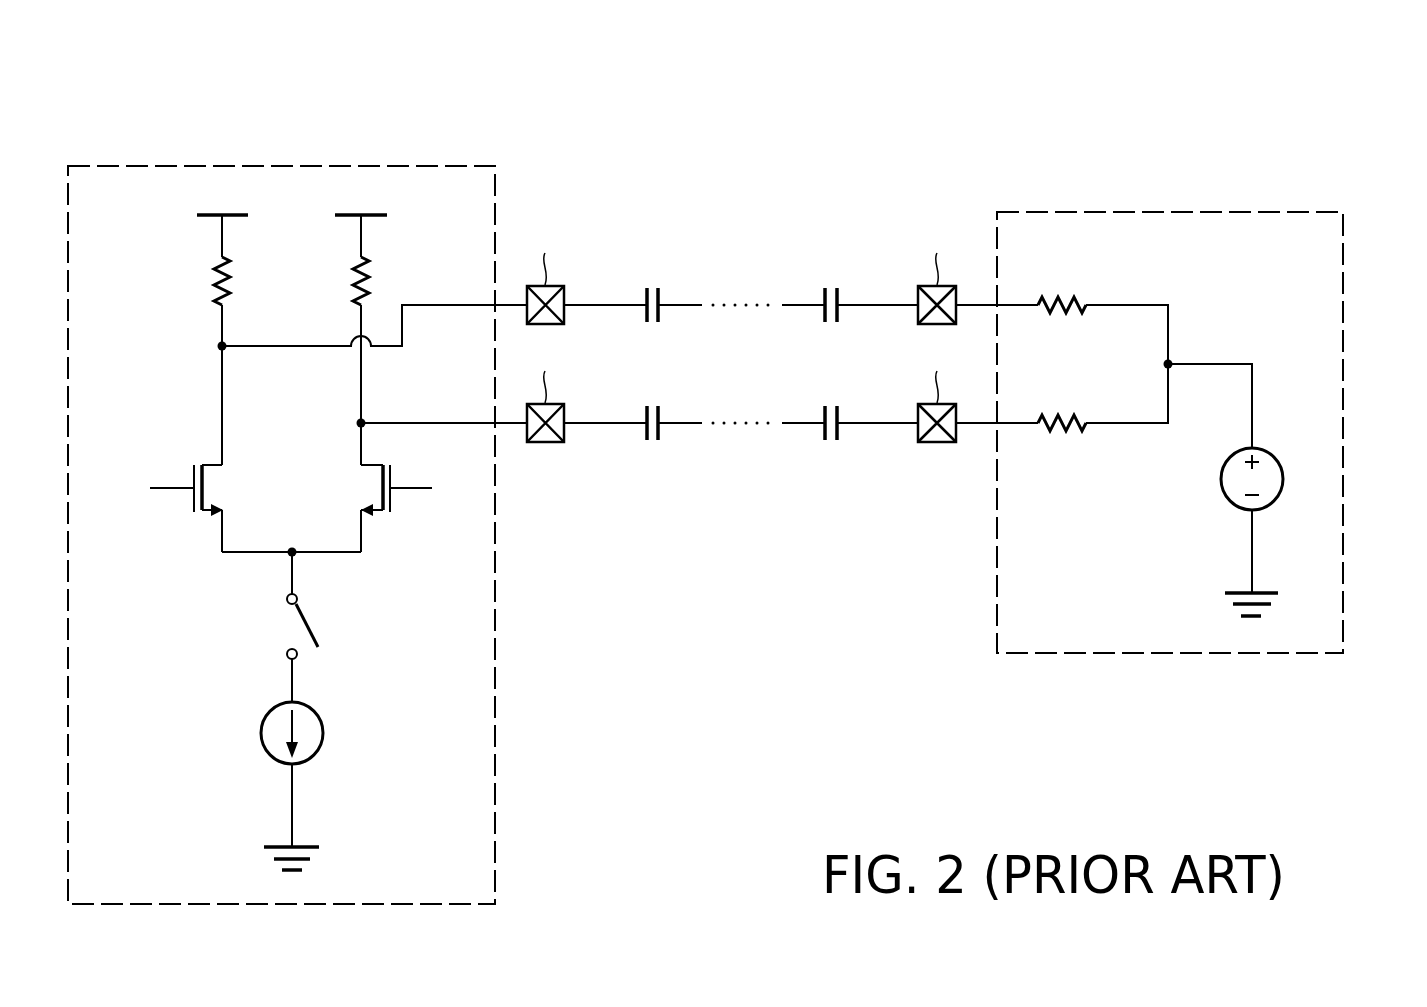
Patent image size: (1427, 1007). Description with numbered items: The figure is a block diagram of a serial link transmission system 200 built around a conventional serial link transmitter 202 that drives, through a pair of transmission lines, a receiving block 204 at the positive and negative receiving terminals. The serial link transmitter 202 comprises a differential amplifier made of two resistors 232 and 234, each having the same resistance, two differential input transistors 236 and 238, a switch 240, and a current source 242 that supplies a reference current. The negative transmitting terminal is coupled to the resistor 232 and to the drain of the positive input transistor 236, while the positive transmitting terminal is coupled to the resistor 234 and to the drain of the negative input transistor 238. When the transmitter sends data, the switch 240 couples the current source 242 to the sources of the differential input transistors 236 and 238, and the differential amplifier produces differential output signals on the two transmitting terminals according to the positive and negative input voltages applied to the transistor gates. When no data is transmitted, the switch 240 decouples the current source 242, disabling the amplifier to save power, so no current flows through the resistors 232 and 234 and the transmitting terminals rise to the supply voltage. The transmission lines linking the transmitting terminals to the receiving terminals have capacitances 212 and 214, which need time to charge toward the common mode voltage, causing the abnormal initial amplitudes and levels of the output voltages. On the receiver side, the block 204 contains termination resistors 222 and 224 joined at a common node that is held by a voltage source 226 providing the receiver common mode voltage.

The serial link transmission system 200 is at (1322, 126).
The serial link transmitter 202 is at (282, 165).
The receiver 204 is at (1180, 210).
The capacitance 212 is at (652, 287).
The capacitance 214 is at (652, 405).
The termination resistor 222 is at (1062, 300).
The termination resistor 224 is at (1062, 418).
The common-mode voltage source 226 is at (1272, 455).
The resistor 232 is at (212, 281).
The resistor 234 is at (352, 281).
The positive input transistor 236 is at (198, 512).
The negative input transistor 238 is at (387, 512).
The switch 240 is at (318, 622).
The current source 242 is at (312, 707).